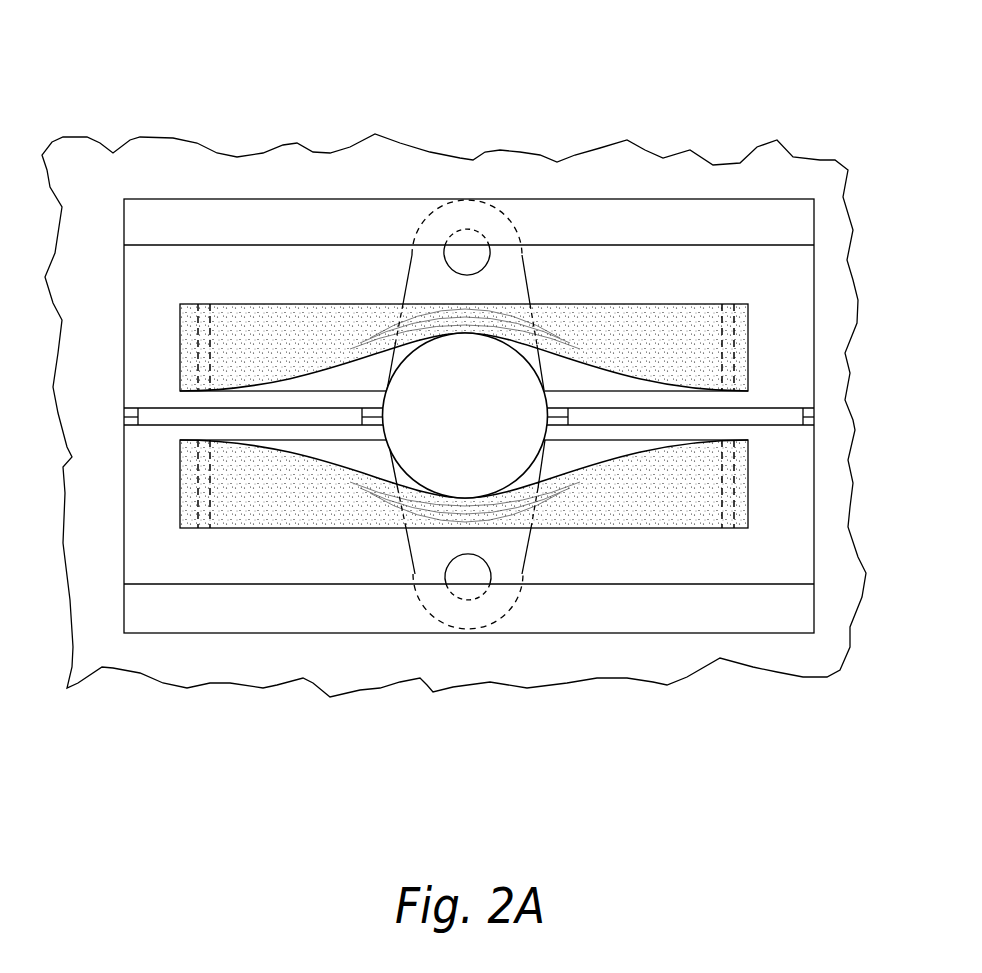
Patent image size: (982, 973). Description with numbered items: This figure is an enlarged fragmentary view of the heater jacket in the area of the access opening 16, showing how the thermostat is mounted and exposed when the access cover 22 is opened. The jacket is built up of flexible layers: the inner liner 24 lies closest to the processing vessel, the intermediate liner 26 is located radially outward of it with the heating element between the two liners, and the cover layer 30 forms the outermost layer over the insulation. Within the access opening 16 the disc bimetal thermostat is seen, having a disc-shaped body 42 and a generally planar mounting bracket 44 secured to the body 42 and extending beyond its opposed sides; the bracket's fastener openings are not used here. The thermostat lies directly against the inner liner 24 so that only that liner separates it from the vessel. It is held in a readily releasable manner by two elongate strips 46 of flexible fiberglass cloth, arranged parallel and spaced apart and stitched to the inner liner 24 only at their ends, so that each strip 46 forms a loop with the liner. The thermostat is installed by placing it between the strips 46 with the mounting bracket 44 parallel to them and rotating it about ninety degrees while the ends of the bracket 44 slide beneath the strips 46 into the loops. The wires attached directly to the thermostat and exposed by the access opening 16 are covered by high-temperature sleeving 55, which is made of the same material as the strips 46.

The access opening 16 is at (815, 557).
The access cover 22 is at (402, 547).
The inner liner 24 is at (670, 572).
The intermediate liner 26 is at (547, 613).
The cover layer 30 is at (568, 665).
The disc-shaped body 42 is at (544, 392).
The mounting bracket 44 is at (525, 282).
The strips 46 is at (292, 305).
The high-temperature sleeving 55 is at (158, 407).